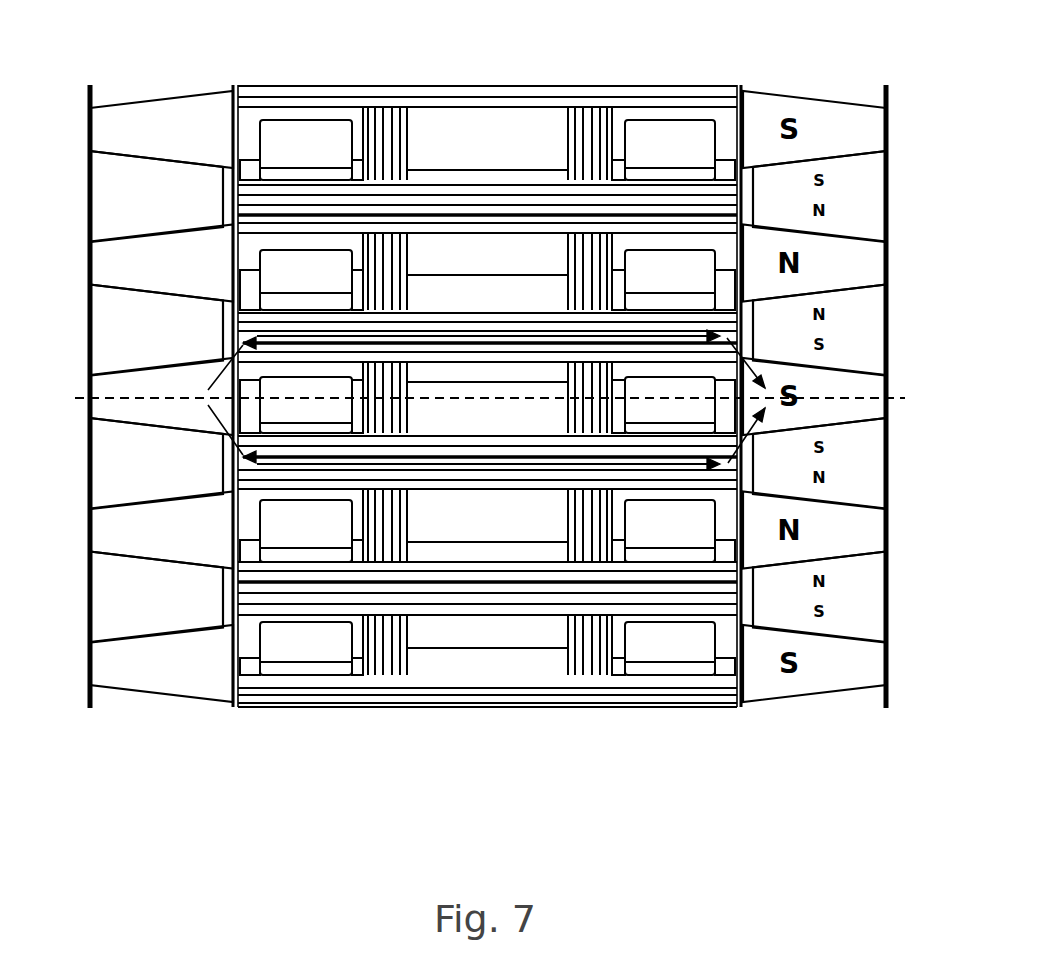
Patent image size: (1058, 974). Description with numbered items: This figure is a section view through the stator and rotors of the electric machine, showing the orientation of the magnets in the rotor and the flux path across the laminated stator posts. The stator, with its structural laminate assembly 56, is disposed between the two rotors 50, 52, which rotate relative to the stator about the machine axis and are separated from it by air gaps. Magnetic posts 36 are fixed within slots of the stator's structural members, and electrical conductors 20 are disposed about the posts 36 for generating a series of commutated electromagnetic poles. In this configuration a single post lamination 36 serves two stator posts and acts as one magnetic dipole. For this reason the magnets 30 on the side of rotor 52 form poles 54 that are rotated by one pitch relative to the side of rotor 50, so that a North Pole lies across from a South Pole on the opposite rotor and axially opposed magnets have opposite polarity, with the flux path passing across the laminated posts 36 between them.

The electrical conductors 20 is at (698, 655).
The magnets 30 is at (868, 340).
The magnetic posts 36 is at (318, 210).
The rotor 50 is at (178, 705).
The rotor 52 is at (813, 95).
The poles 54 is at (855, 527).
The structural laminate assembly 56 is at (390, 135).